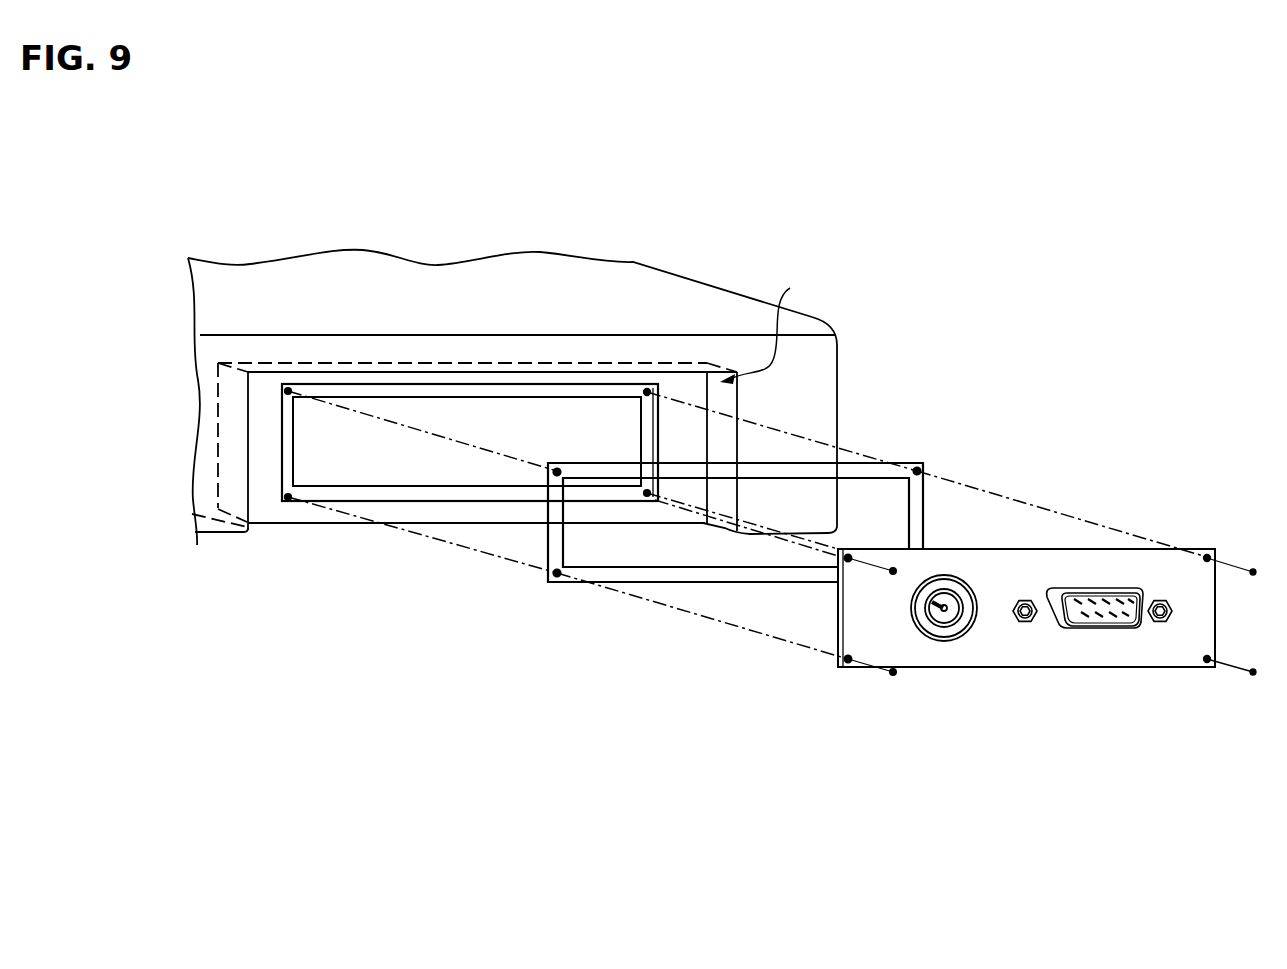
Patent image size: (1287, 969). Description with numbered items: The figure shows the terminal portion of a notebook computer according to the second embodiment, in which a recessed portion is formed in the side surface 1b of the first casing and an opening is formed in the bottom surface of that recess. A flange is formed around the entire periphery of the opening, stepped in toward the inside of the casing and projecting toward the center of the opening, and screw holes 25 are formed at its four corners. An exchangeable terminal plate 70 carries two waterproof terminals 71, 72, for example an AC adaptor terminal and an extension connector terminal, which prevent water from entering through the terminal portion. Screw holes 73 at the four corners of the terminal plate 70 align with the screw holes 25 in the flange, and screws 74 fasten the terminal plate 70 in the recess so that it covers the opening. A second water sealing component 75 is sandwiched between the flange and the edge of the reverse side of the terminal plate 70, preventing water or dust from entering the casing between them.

The side surface 1b is at (807, 352).
The screw holes 25 is at (648, 392).
The terminal plate 70 is at (994, 558).
The terminal 71 is at (950, 642).
The terminal 72 is at (1100, 630).
The screw holes 73 is at (1210, 549).
The screws 74 is at (1255, 572).
The second water sealing component 75 is at (900, 470).